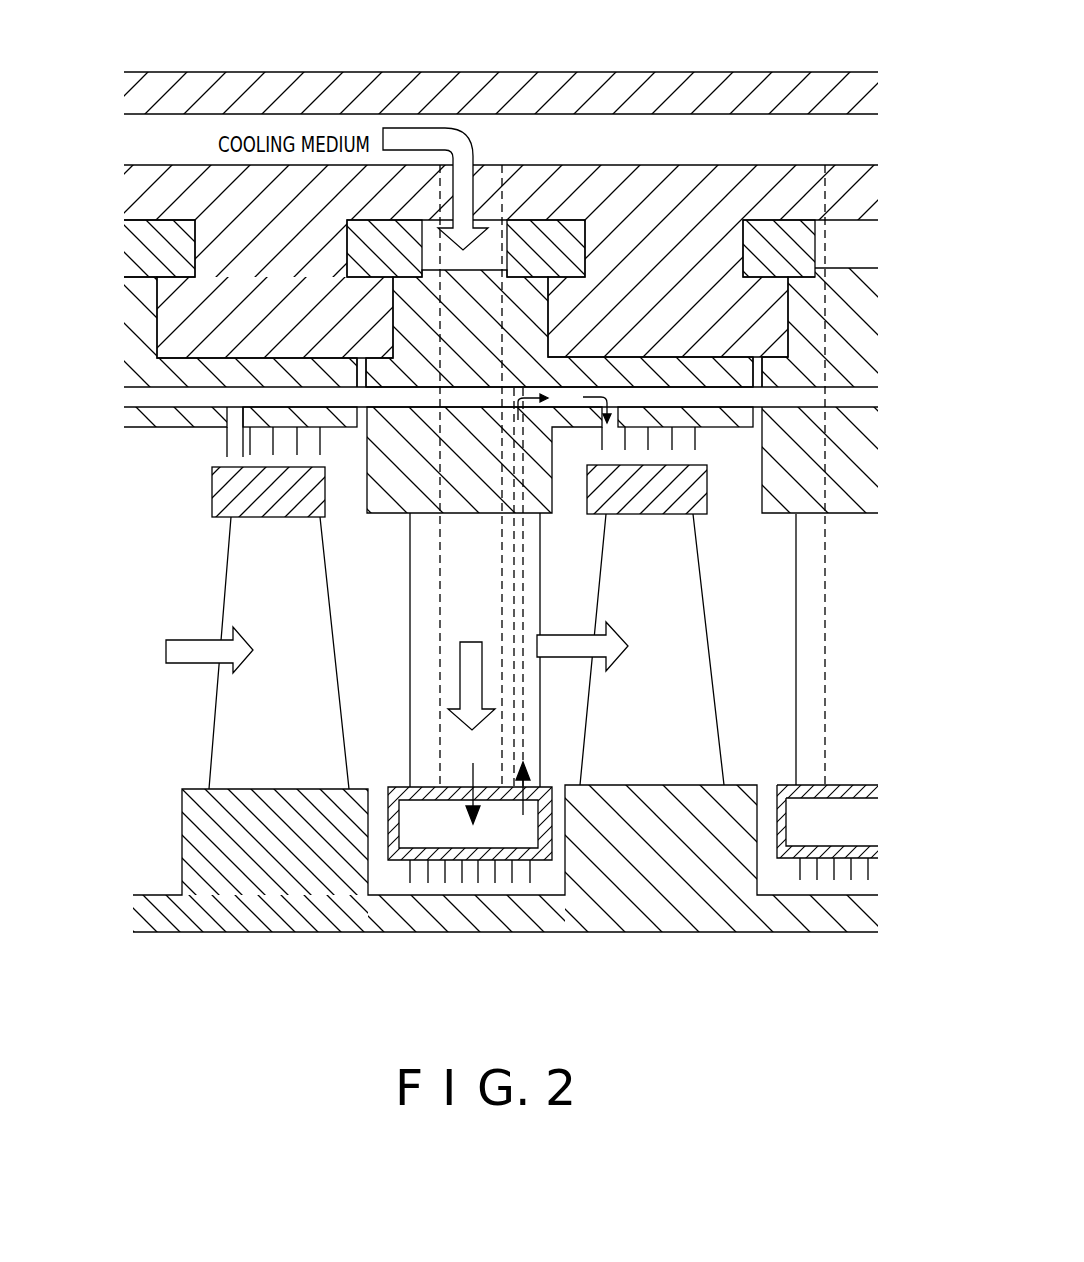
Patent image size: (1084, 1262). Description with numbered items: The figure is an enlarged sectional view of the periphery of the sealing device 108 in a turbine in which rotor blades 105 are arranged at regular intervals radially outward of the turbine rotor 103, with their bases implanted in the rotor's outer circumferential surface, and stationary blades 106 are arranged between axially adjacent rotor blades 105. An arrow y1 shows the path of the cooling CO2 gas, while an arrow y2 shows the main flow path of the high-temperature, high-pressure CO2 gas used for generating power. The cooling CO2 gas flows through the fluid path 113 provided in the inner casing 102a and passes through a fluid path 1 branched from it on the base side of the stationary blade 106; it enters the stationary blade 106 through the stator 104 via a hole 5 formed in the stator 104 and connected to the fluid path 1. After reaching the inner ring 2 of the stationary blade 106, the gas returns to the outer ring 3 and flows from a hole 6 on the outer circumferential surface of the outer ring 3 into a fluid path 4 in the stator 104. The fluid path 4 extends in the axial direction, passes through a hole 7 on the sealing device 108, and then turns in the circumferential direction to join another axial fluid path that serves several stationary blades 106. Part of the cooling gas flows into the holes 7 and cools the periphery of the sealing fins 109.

The fluid path 1 is at (487, 183).
The inner ring 2 is at (425, 813).
The outer ring 3 is at (397, 497).
The fluid path 4 is at (143, 402).
The hole 5 is at (475, 408).
The hole (first hole) 6 is at (512, 388).
The hole (second hole) 7 is at (235, 418).
The upper wall 102a is at (770, 92).
The turbine rotor 103 is at (235, 907).
The stator 104 is at (557, 238).
The rotor blade 105 is at (210, 738).
The stationary blade 106 is at (540, 732).
The sealing device 108 is at (214, 456).
The sealing fin 109 is at (222, 442).
The fluid path 113 is at (670, 137).
The arrow y1 is at (433, 142).
The arrow y2 is at (193, 642).